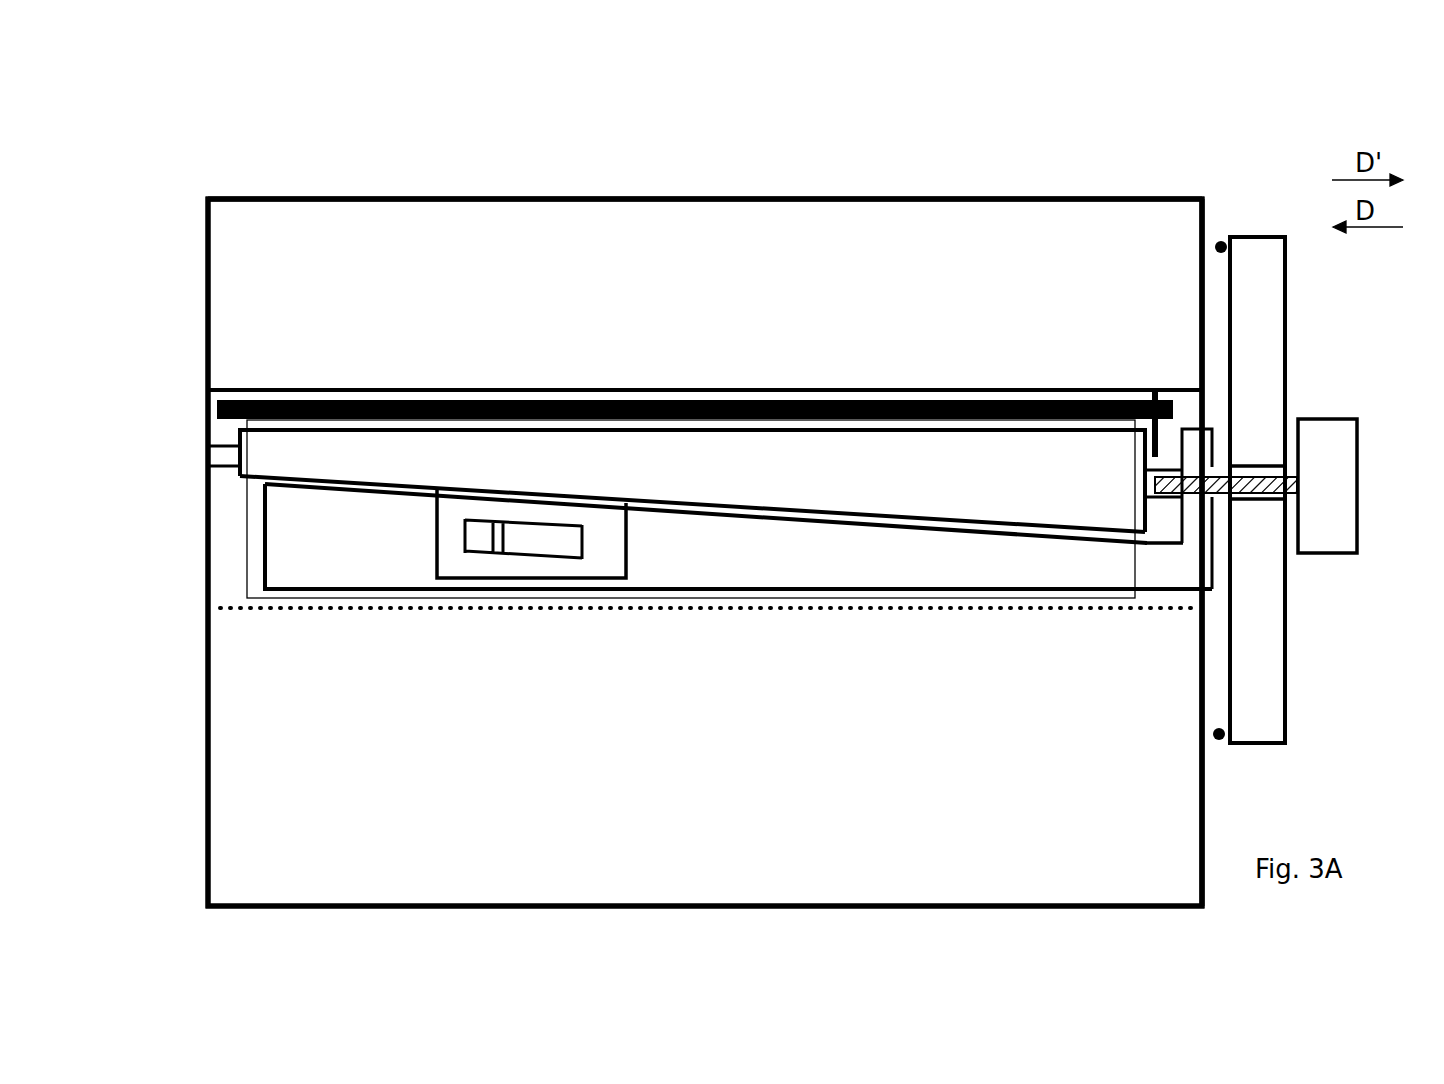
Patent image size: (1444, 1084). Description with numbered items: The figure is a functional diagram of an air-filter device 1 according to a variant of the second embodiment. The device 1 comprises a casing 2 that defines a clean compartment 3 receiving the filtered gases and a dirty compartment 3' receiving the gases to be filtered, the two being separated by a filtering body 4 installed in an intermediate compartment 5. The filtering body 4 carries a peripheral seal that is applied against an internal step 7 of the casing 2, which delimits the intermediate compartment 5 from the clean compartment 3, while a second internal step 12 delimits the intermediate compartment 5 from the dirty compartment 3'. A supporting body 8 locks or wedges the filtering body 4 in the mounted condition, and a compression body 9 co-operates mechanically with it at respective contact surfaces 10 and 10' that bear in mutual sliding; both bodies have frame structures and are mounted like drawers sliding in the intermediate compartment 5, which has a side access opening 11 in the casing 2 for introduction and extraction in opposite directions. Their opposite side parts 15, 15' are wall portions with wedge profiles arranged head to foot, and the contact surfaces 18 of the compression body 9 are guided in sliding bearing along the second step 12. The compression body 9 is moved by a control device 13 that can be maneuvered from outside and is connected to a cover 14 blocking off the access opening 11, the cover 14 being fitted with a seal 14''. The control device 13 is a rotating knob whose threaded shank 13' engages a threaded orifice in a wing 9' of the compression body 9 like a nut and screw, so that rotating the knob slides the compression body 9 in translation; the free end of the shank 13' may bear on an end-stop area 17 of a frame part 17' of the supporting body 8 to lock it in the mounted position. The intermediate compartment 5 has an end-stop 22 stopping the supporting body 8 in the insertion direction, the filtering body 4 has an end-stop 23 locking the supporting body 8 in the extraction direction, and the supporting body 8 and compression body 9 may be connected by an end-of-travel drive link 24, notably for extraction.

The air-filter device 1 is at (178, 859).
The casing 2 is at (870, 195).
The clean compartment 3 is at (705, 163).
The dirty compartment 3' is at (1228, 552).
The filtering body 4 is at (715, 398).
The intermediate compartment 5 is at (233, 553).
The internal step 7 is at (872, 390).
The supporting body 8 is at (575, 445).
The side part of supporting body frame 15 is at (695, 409).
The compression body 9 is at (1299, 535).
The side part of compression body frame 15' is at (738, 601).
The wing 9' is at (1272, 460).
The contact surface of supporting body 10 is at (692, 587).
The contact surface of compression body 10' is at (706, 591).
The side access opening 11 is at (1242, 442).
The second internal step 12 is at (1048, 617).
The control device 13 is at (1364, 486).
The threaded shank 13' is at (1299, 443).
The cover 14 is at (1287, 490).
The seal 14'' is at (1250, 431).
The end-stop area 17 is at (1261, 564).
The frame part of supporting body 17' is at (1254, 638).
The contact surfaces of compression body 18 is at (588, 590).
The end-stop 22 is at (227, 455).
The end-stop 23 is at (1160, 422).
The end-of-travel drive link 24 is at (535, 542).